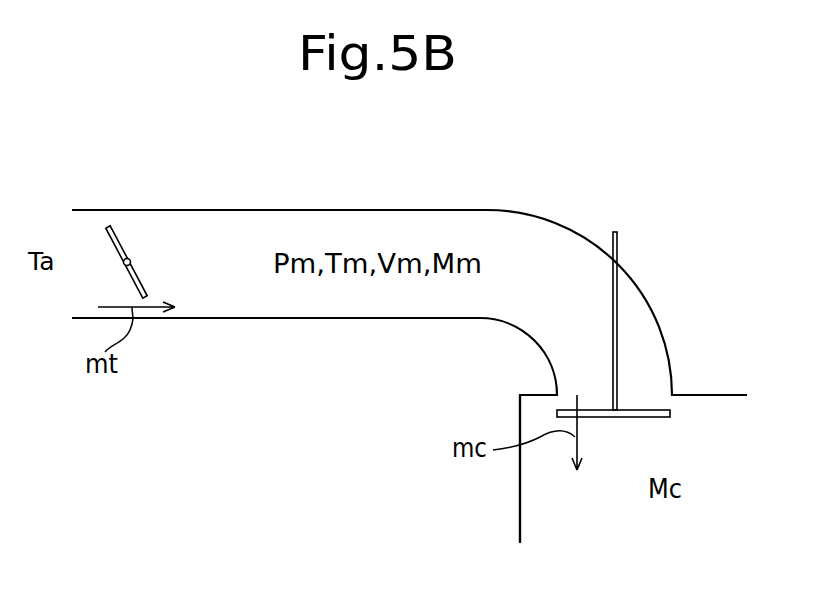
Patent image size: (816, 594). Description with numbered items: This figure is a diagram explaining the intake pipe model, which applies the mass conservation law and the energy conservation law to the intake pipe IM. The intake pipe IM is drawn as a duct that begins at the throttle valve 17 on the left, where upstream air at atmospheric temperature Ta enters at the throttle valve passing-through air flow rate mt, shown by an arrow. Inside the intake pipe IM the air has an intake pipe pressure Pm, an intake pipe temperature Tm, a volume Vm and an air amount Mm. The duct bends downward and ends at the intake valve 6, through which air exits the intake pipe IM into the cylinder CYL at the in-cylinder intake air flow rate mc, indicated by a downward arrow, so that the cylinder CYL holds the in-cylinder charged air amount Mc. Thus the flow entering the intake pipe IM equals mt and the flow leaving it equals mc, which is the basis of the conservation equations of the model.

The throttle valve 17 is at (117, 234).
The intake valve 6 is at (618, 368).
The intake pipe IM is at (365, 320).
The cylinder CYL is at (520, 505).